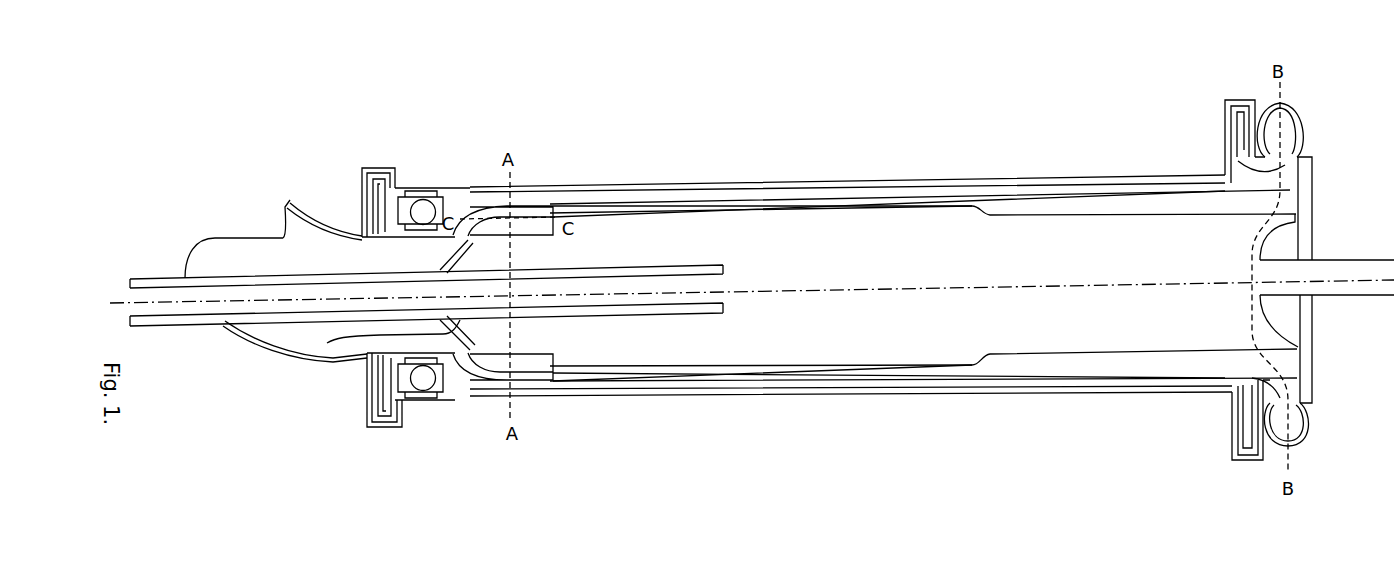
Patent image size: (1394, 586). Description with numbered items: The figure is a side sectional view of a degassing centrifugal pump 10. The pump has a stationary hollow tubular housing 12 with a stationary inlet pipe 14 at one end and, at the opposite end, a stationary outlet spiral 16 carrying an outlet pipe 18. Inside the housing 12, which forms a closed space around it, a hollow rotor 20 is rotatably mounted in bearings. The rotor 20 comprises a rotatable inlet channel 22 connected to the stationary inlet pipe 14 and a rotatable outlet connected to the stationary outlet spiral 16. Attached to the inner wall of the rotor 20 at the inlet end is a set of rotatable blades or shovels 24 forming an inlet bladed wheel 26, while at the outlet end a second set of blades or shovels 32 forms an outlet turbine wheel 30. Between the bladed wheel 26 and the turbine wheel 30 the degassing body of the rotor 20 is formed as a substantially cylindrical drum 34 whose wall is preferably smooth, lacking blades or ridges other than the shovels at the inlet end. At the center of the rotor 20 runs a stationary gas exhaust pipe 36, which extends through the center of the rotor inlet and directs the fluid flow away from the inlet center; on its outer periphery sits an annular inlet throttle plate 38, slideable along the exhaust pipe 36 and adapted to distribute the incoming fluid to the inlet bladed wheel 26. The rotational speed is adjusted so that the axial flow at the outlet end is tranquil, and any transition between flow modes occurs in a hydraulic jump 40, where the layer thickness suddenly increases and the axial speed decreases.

The degassing pump 10 is at (295, 248).
The hollow tubular housing 12 is at (450, 186).
The inlet pipe 14 is at (300, 212).
The outlet spiral 16 is at (1313, 150).
The outlet pipe 18 is at (1310, 122).
The hollow rotor 20 is at (613, 202).
The rotatable inlet channel 22 is at (402, 258).
The rotatable blades or shovels 24 is at (517, 223).
The inlet bladed wheel 26 is at (527, 222).
The outlet turbine wheel 30 is at (1227, 168).
The second set of blades or shovels 32 is at (1238, 178).
The cylindrical drum 34 is at (763, 198).
The gas exhaust pipe 36 is at (257, 333).
The annular inlet throttle plate 38 is at (335, 342).
The hydraulic jump 40 is at (973, 213).